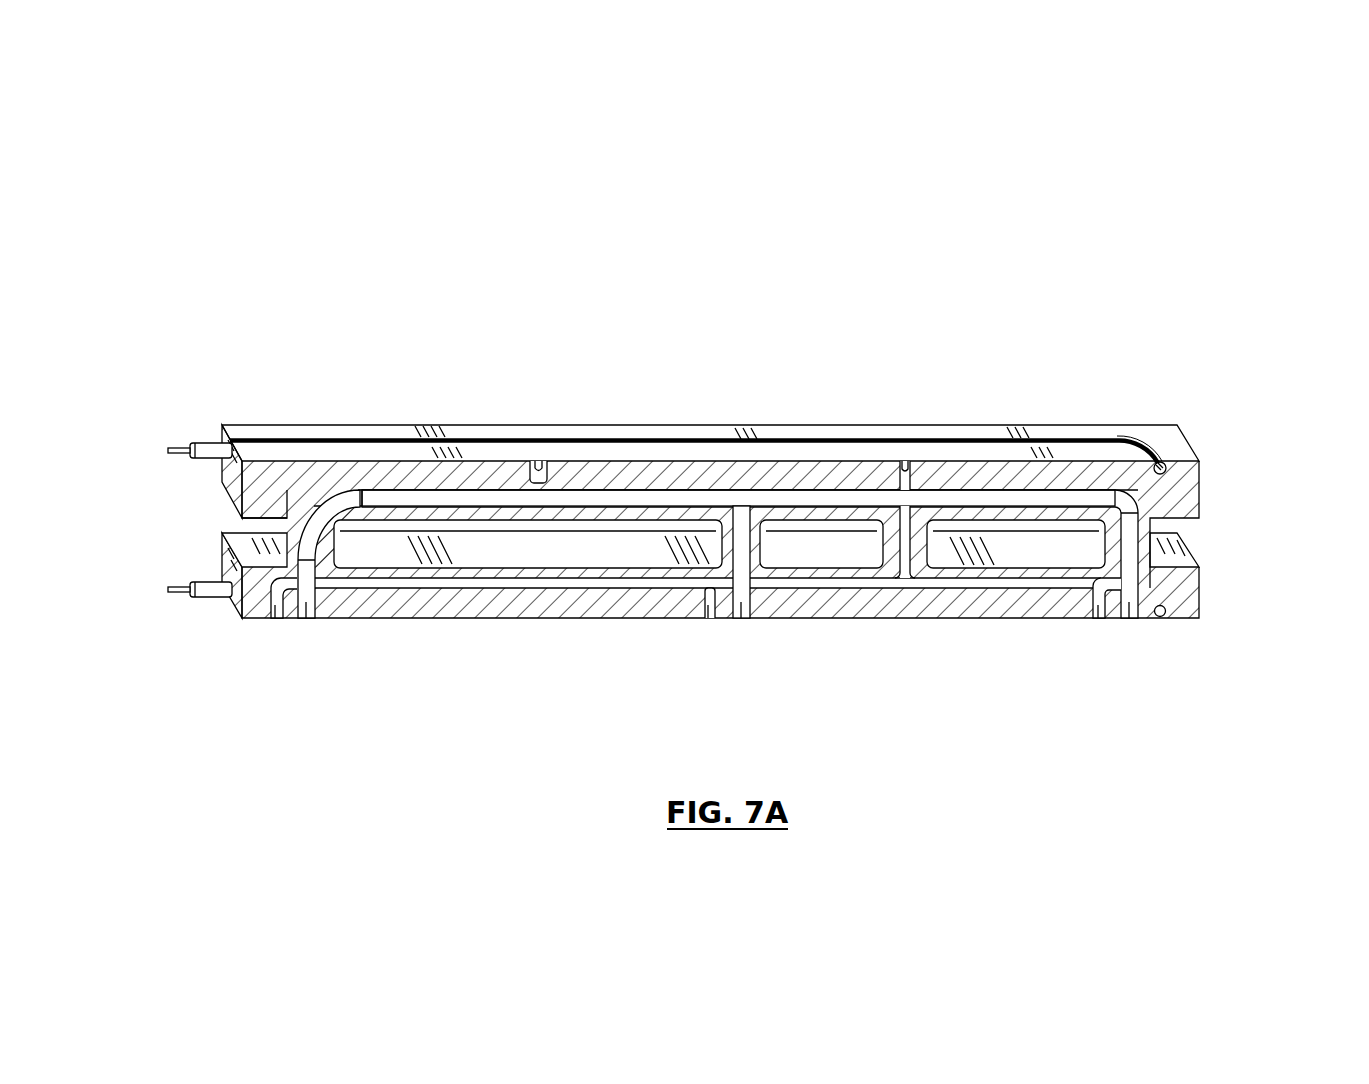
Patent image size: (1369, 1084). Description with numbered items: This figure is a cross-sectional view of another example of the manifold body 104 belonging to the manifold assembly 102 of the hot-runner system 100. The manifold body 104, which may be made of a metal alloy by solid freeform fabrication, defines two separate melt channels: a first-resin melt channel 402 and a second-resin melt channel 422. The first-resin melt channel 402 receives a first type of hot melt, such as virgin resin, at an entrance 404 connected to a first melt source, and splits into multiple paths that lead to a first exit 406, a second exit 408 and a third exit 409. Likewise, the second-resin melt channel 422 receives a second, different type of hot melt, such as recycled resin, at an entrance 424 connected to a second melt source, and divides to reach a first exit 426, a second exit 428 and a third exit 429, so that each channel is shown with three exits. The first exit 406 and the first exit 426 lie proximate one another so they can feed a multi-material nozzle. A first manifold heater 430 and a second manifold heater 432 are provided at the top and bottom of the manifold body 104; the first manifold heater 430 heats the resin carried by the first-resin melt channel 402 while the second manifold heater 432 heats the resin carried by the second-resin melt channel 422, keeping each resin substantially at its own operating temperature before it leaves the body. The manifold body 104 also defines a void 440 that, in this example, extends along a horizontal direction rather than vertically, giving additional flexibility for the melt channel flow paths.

The hot-runner system 100 is at (1288, 240).
The manifold assembly 102 is at (1240, 346).
The manifold body 104 is at (1183, 466).
The first-resin melt channel 402 is at (397, 498).
The entrance 404 is at (540, 470).
The first exit 406 is at (307, 610).
The second exit 408 is at (740, 610).
The third exit 409 is at (1128, 612).
The second-resin melt channel 422 is at (1000, 585).
The entrance 424 is at (905, 470).
The first exit 426 is at (275, 610).
The second exit 428 is at (703, 610).
The third exit 429 is at (1098, 610).
The first manifold heater 430 is at (207, 463).
The second manifold heater 432 is at (207, 603).
The void 440 is at (256, 527).